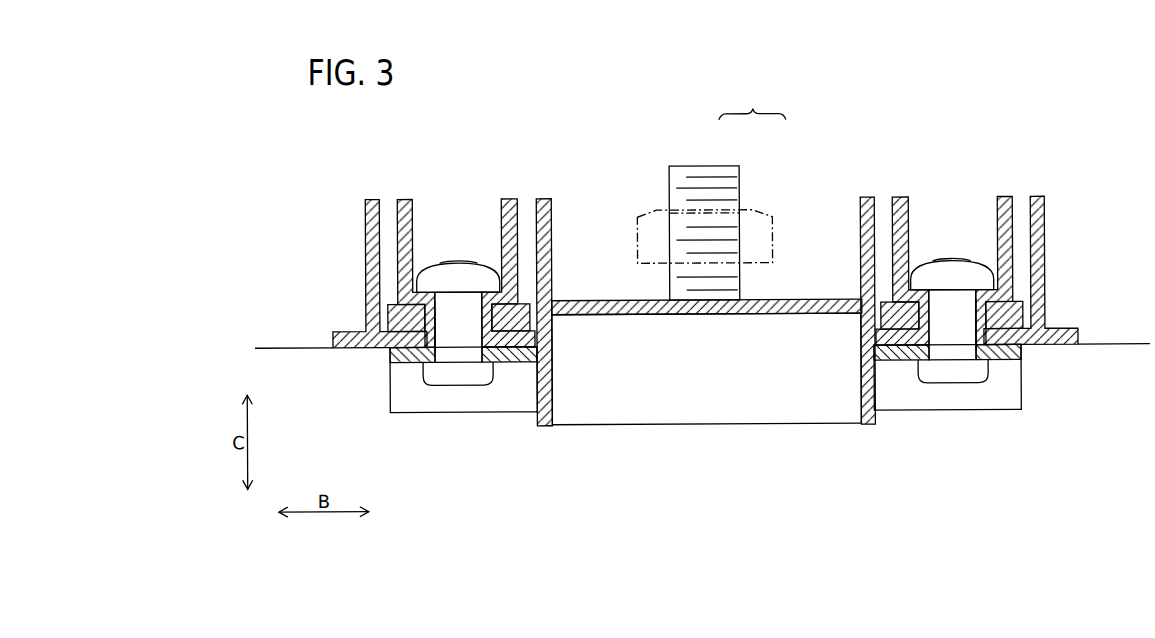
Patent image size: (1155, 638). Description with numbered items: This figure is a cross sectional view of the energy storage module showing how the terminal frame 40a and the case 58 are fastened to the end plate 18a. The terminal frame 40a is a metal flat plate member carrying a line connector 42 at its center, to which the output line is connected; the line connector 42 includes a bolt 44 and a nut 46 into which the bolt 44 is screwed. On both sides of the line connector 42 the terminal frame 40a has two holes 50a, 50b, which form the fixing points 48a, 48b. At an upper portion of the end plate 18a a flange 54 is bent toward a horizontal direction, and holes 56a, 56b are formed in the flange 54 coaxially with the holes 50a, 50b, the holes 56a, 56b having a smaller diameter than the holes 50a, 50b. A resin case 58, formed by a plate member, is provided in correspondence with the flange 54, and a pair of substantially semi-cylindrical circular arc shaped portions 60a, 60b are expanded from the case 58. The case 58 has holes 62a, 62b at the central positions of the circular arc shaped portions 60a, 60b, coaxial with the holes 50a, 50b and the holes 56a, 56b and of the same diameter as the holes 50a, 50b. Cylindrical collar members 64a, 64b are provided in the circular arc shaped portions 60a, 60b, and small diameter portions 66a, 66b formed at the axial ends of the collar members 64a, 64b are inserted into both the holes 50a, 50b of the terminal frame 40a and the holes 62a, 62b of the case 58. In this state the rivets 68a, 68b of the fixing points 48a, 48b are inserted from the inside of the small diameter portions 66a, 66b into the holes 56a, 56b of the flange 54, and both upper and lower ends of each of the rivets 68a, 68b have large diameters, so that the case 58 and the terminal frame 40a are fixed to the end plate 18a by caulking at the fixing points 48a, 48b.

The end plate 18a is at (263, 342).
The terminal frame 40a is at (902, 336).
The line connector 42 is at (712, 194).
The bolt 44 is at (730, 170).
The nut 46 is at (765, 208).
The fixing point 48a is at (387, 194).
The fixing point 48b is at (1023, 194).
The hole 50a is at (443, 305).
The hole 50b is at (980, 310).
The flange 54 is at (515, 362).
The hole 56a is at (438, 350).
The hole 56b is at (977, 349).
The case 58 is at (788, 428).
The circular arc shaped portion 60a is at (367, 223).
The circular arc shaped portion 60b is at (1038, 225).
The hole 62a is at (440, 336).
The hole 62b is at (973, 337).
The collar member 64a is at (396, 252).
The collar member 64b is at (1015, 250).
The small diameter portion 66a is at (423, 325).
The small diameter portion 66b is at (1007, 319).
The rivet 68a is at (485, 277).
The rivet 68b is at (925, 277).